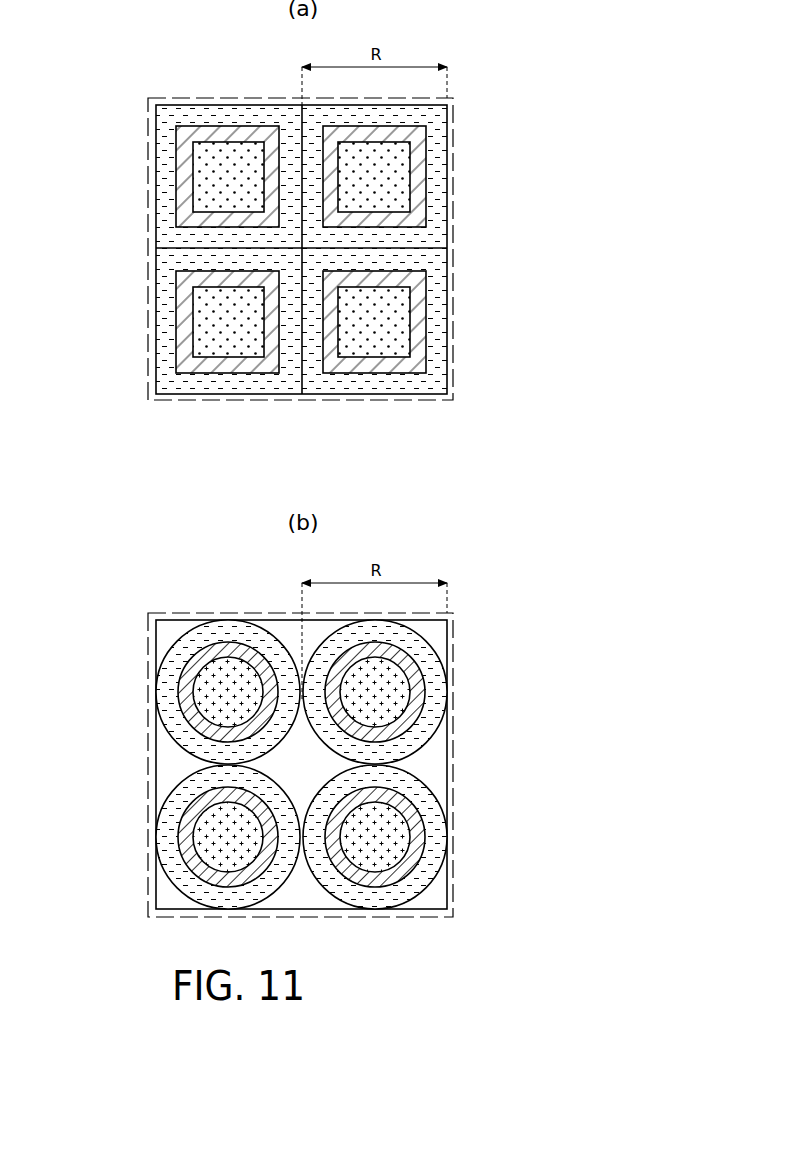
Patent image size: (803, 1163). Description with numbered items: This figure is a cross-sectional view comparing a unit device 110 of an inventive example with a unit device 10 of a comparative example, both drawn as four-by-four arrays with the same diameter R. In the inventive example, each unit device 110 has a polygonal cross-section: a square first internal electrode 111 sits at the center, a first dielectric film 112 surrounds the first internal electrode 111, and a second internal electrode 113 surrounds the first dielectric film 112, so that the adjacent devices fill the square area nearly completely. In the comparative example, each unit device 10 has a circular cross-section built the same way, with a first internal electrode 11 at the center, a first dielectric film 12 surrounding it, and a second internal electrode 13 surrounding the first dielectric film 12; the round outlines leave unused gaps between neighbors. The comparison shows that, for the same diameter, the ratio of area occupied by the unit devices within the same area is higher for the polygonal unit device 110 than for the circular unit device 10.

The unit device 110 is at (244, 249).
The first internal electrode 111 is at (213, 170).
The first dielectric film 112 is at (177, 190).
The second internal electrode 113 is at (167, 213).
The unit device 10 is at (256, 765).
The first internal electrode 11 is at (195, 686).
The first dielectric film 12 is at (182, 708).
The second internal electrode 13 is at (178, 727).